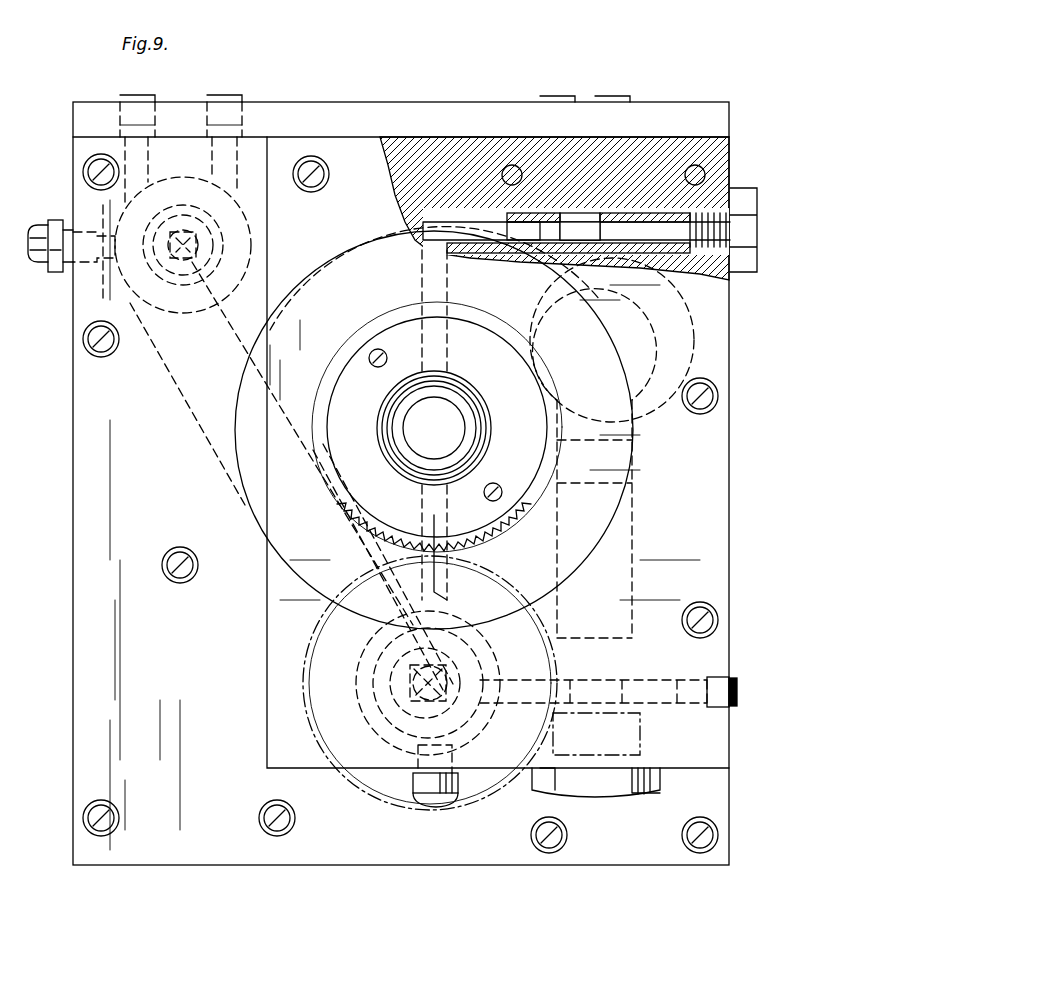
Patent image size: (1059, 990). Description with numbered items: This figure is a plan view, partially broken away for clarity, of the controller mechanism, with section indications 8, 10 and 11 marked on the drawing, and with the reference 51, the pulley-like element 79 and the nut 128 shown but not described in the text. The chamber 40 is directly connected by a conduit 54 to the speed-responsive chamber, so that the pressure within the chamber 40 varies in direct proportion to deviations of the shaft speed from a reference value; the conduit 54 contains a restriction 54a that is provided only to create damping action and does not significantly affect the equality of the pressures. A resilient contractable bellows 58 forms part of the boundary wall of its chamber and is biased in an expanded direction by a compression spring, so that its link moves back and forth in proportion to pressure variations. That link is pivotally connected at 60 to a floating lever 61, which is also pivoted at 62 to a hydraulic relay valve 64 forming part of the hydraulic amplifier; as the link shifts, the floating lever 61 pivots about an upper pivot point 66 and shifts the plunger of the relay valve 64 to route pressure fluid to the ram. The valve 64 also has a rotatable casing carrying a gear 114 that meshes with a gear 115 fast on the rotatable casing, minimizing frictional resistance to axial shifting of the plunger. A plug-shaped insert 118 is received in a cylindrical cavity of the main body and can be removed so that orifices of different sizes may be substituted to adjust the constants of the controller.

The adjusting knob / section line 10 is at (5, 268).
The chamber 40 is at (700, 352).
The hub bearing 51 is at (470, 446).
The conduit 54 is at (570, 230).
The restriction 54a is at (527, 228).
The bellows 58 is at (356, 645).
The pivot 60 is at (470, 640).
The floating lever 61 is at (240, 345).
The pivot 62 is at (470, 715).
The hydraulic relay valve 64 is at (400, 732).
The upper pivot point 66 is at (187, 404).
The pulley 79 is at (181, 176).
The gear 114 is at (307, 667).
The gear 115 is at (500, 548).
The plug-shaped insert 118 is at (636, 606).
The nut 128 is at (655, 785).
The section line 8 is at (404, 42).
The section line 11 is at (558, 42).